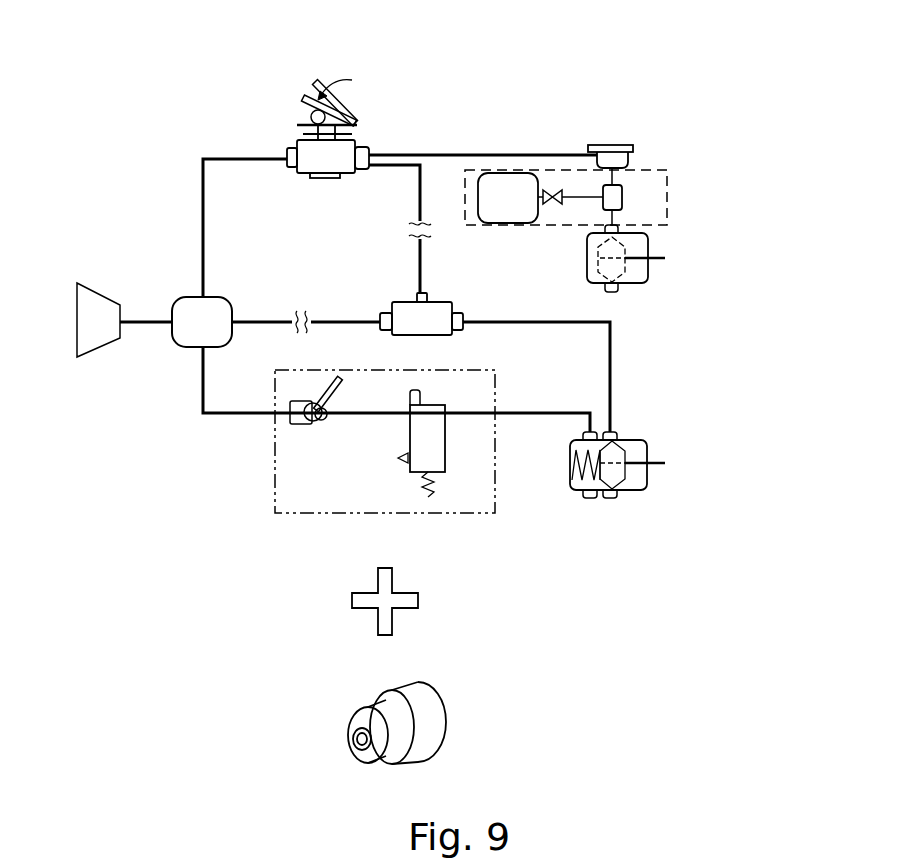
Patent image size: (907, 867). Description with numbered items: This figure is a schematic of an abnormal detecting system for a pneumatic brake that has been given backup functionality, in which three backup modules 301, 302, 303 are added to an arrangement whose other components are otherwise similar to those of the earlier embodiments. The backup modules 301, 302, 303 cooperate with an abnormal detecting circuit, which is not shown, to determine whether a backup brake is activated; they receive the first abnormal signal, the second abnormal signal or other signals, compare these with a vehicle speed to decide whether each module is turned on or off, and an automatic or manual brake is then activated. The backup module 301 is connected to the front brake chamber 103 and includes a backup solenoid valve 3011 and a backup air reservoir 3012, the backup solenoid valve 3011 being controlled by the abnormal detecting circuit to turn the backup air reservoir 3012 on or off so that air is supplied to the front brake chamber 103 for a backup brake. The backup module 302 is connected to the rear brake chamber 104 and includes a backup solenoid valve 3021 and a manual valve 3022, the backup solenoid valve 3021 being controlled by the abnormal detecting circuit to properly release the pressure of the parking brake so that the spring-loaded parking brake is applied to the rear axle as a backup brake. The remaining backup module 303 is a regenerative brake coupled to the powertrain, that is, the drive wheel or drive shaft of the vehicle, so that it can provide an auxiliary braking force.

The backup module 301 is at (667, 195).
The backup solenoid valve 3011 is at (618, 190).
The backup air reservoir 3012 is at (502, 173).
The front brake chamber 103 is at (587, 258).
The rear brake chamber 104 is at (645, 475).
The backup module 302 is at (495, 505).
The backup solenoid valve 3021 is at (432, 492).
The manual valve 3022 is at (295, 425).
The backup module 303 is at (440, 734).